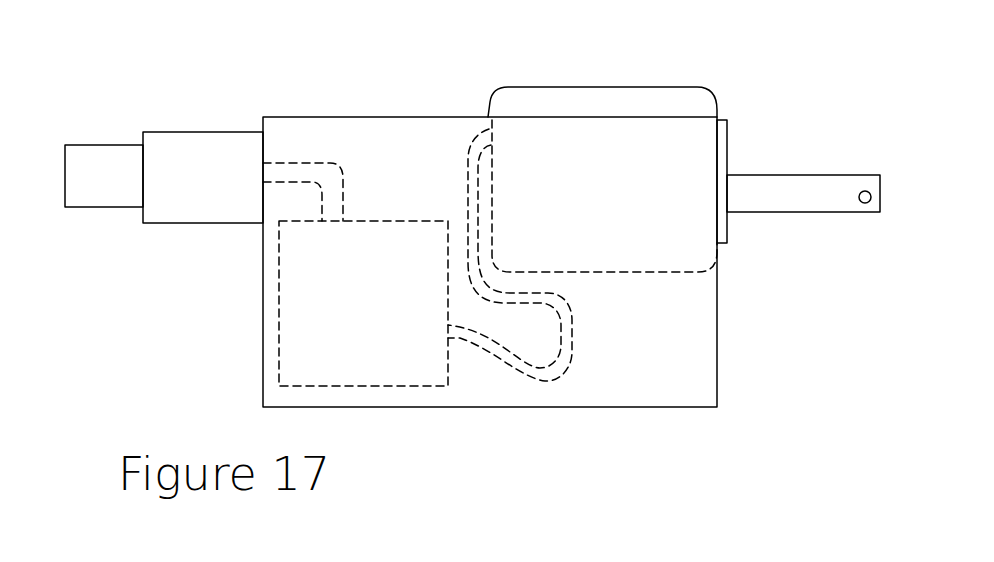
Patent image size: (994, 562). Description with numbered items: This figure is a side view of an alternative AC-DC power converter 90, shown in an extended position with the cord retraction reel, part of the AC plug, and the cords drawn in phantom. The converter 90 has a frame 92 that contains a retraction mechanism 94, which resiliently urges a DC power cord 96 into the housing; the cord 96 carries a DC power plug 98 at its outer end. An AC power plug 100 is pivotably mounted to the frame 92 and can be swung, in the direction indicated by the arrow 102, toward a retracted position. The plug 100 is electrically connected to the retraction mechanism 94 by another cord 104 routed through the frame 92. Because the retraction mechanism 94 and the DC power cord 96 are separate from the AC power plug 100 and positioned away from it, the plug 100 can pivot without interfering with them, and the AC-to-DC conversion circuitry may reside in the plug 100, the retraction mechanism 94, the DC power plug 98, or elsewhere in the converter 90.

The converter 90 is at (670, 434).
The frame 92 is at (661, 332).
The retraction mechanism 94 is at (372, 356).
The DC power cord 96 is at (306, 173).
The DC power plug 98 is at (97, 163).
The AC power plug 100 is at (728, 32).
The arrow 102 is at (740, 56).
The cord 104 is at (545, 373).